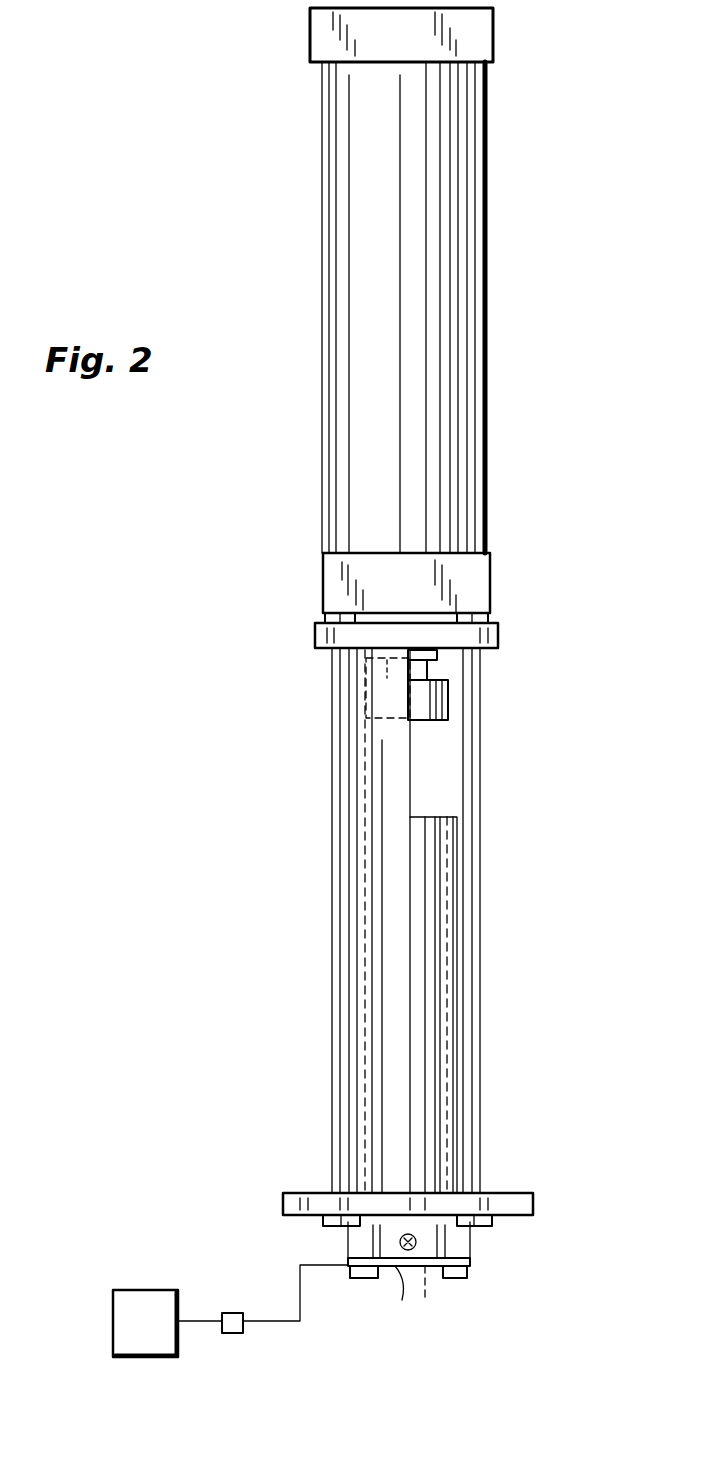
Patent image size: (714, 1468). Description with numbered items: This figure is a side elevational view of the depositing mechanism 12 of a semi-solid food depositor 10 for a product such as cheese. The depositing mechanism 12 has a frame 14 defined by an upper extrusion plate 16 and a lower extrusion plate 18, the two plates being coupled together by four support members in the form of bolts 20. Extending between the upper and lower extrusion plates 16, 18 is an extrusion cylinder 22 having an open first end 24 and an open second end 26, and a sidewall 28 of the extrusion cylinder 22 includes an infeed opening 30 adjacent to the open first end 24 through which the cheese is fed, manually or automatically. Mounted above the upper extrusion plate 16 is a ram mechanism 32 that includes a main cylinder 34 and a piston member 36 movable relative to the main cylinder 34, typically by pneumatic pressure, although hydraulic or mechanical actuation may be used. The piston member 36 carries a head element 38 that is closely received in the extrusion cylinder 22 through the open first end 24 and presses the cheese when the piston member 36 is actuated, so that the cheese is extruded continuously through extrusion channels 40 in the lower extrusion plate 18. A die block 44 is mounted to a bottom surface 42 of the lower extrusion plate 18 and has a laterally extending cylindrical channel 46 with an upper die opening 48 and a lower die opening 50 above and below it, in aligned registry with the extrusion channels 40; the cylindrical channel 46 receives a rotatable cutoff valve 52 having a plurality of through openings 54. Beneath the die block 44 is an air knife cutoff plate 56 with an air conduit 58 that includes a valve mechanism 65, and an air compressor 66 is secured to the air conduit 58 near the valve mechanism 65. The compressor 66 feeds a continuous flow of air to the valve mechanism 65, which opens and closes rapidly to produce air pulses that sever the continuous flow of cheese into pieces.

The semi-solid food depositor 10 is at (557, 180).
The depositing mechanism 12 is at (503, 635).
The frame 14 is at (490, 652).
The upper extrusion plate 16 is at (367, 635).
The lower extrusion plate 18 is at (533, 1197).
The bolts 20 is at (332, 860).
The extrusion cylinder 22 is at (455, 990).
The open first end 24 is at (447, 665).
The open second end 26 is at (357, 1197).
The sidewall 28 is at (458, 1050).
The infeed opening 30 is at (427, 763).
The ram mechanism 32 is at (492, 112).
The main cylinder 34 is at (477, 318).
The piston member 36 is at (445, 703).
The head element 38 is at (410, 697).
The extrusion channels 40 is at (430, 1185).
The bottom surface 42 is at (522, 1218).
The die block 44 is at (472, 1247).
The cylindrical channel 46 is at (397, 1264).
The upper die opening 48 is at (370, 1227).
The lower die opening 50 is at (427, 1267).
The rotatable cutoff valve 52 is at (417, 1244).
The through openings 54 is at (433, 1223).
The air knife cutoff plate 56 is at (363, 1274).
The air conduit 58 is at (263, 1327).
The valve mechanism 65 is at (232, 1312).
The air compressor 66 is at (150, 1345).